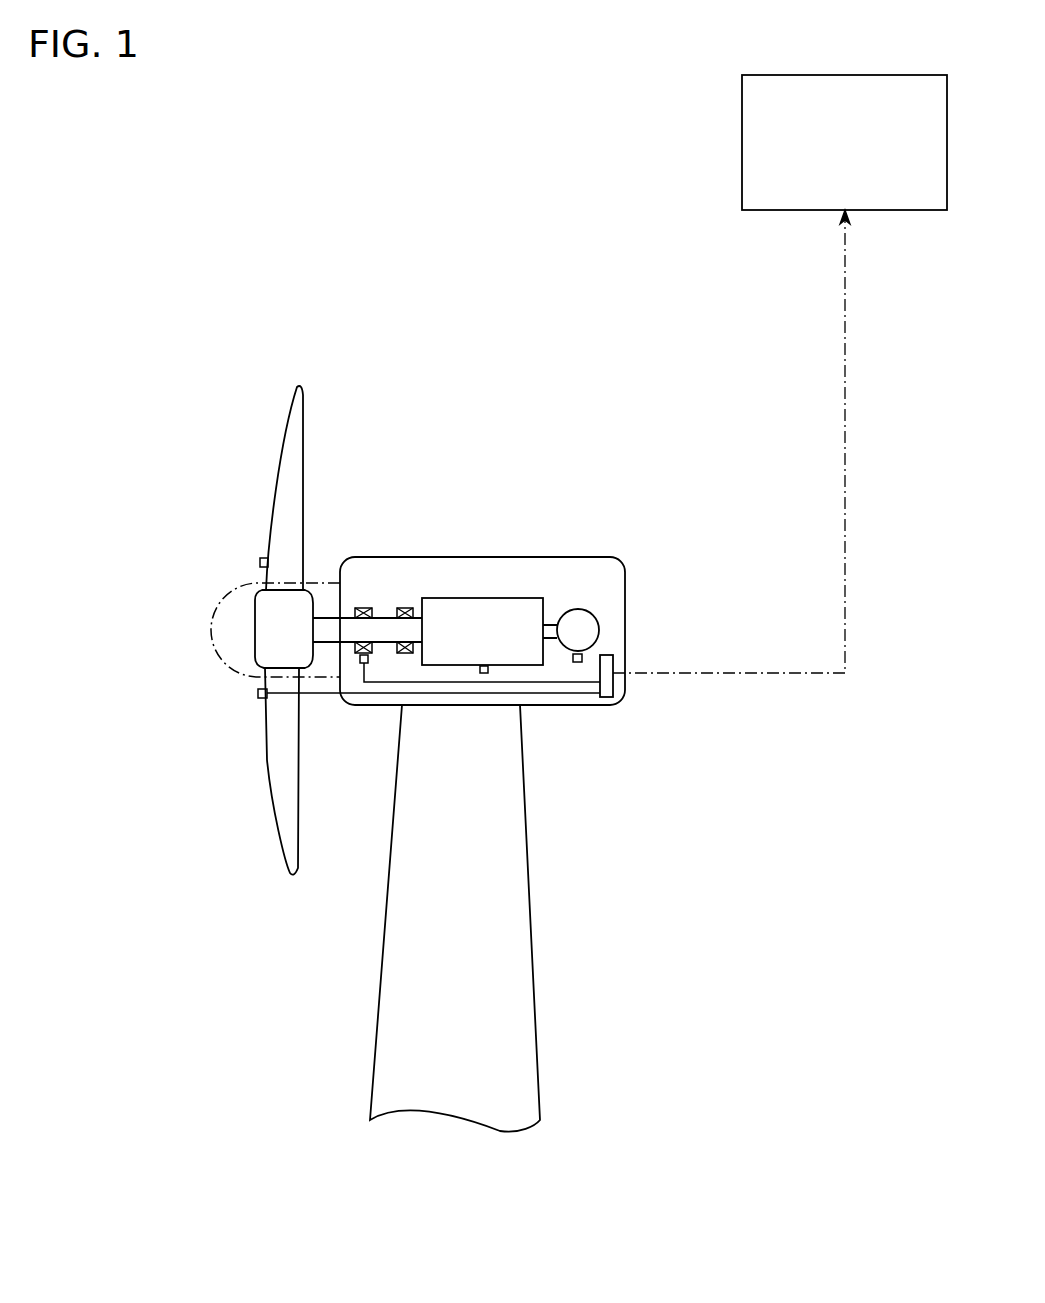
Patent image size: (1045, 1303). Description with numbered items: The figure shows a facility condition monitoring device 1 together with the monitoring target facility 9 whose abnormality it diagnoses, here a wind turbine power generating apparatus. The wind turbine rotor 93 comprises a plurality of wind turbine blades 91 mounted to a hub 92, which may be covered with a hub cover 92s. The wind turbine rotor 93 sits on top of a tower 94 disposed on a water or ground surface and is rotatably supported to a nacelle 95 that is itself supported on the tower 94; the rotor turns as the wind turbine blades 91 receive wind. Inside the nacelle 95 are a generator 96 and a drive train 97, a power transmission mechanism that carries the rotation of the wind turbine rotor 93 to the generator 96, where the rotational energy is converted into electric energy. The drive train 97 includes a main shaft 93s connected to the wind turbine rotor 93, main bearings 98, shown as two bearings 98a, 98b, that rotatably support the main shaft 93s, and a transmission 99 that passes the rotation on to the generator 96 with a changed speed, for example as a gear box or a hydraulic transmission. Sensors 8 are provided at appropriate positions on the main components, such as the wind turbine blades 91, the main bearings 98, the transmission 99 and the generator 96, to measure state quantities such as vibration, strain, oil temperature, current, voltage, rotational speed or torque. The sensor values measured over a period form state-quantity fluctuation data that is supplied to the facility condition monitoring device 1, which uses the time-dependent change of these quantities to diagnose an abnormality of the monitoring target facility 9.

The facility condition monitoring device 1 is at (910, 74).
The sensors 8 is at (260, 563).
The monitoring target facility 9 is at (495, 380).
The wind turbine blades 91 is at (282, 452).
The hub 92 is at (267, 643).
The hub cover 92s is at (220, 627).
The wind turbine rotor 93 is at (198, 590).
The main shaft 93s is at (330, 612).
The tower 94 is at (528, 860).
The nacelle 95 is at (626, 617).
The generator 96 is at (583, 607).
The drive train 97 is at (448, 588).
The main bearings 98 is at (397, 558).
The main bearing 98a is at (362, 606).
The main bearing 98b is at (405, 606).
The transmission 99 is at (500, 597).